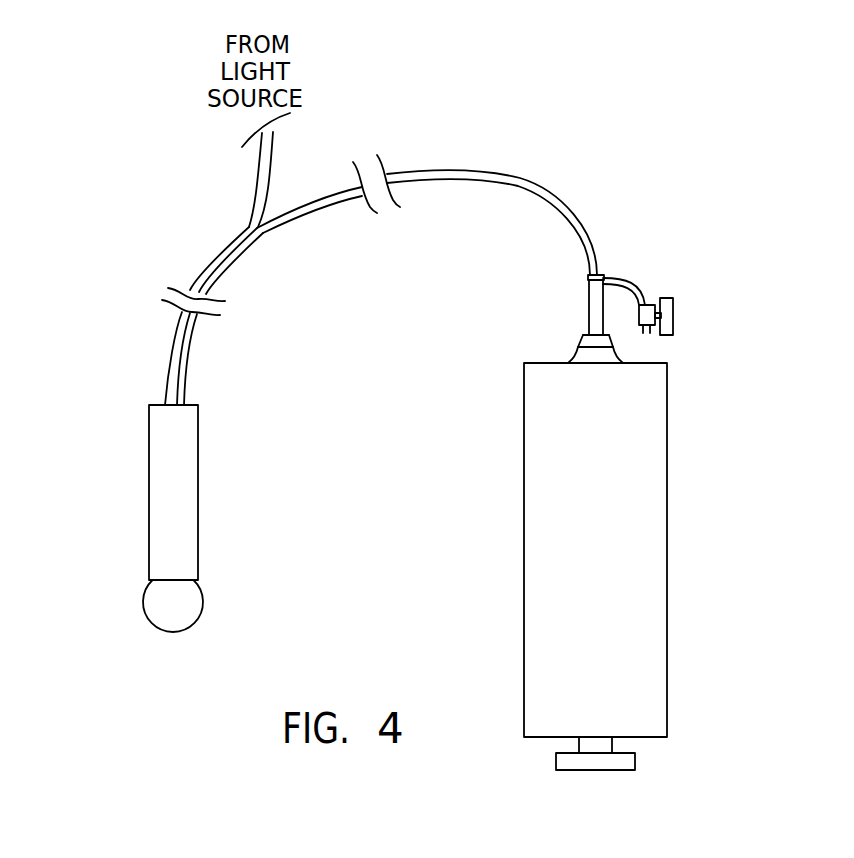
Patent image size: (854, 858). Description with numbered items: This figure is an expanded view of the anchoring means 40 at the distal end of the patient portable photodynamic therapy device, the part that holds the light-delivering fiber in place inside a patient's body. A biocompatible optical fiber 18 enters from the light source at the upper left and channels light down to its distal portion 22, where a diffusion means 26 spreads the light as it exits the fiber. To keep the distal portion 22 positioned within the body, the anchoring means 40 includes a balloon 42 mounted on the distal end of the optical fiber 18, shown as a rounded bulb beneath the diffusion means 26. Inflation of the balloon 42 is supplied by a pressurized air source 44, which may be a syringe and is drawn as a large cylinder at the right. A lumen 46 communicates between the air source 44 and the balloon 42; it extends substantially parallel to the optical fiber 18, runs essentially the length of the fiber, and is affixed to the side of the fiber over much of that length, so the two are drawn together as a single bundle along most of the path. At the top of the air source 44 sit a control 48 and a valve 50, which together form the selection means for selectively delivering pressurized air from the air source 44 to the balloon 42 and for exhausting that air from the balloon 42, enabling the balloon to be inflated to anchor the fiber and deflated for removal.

The anchoring means 40 is at (130, 138).
The optical fiber 18 is at (252, 221).
The distal portion 22 is at (163, 381).
The lumen 46 is at (185, 355).
The diffusion means 26 is at (167, 522).
The balloon 42 is at (202, 605).
The pressurized air source 44 is at (523, 582).
The valve 50 is at (603, 272).
The control 48 is at (648, 298).